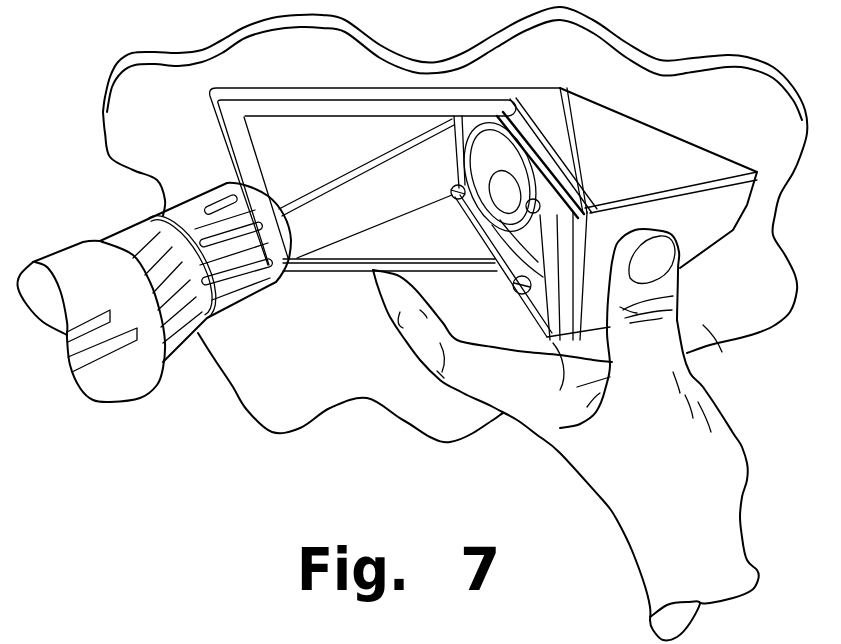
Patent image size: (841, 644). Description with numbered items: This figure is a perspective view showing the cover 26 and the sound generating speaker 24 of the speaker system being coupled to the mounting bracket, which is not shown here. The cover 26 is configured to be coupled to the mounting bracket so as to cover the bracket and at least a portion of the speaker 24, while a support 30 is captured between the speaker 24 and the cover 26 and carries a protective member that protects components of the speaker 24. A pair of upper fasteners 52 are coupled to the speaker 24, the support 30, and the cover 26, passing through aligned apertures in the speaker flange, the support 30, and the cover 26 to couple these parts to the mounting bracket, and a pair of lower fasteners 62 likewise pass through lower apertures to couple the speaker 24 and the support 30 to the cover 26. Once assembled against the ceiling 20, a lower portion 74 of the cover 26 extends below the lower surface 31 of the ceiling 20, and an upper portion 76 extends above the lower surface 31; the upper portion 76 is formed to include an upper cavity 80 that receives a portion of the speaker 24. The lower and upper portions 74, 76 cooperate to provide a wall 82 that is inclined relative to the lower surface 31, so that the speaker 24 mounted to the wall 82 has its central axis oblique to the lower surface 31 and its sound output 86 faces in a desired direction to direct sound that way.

The ceiling 20 is at (727, 293).
The sound generating speaker 24 is at (483, 224).
The cover 26 is at (622, 141).
The support 30 is at (588, 206).
The lower surface 31 is at (720, 355).
The upper fasteners 52 is at (453, 125).
The lower fasteners 62 is at (537, 170).
The lower portion 74 is at (594, 298).
The upper portion 76 is at (373, 197).
The upper cavity 80 is at (303, 264).
The wall 82 is at (556, 365).
The sound output 86 is at (500, 252).